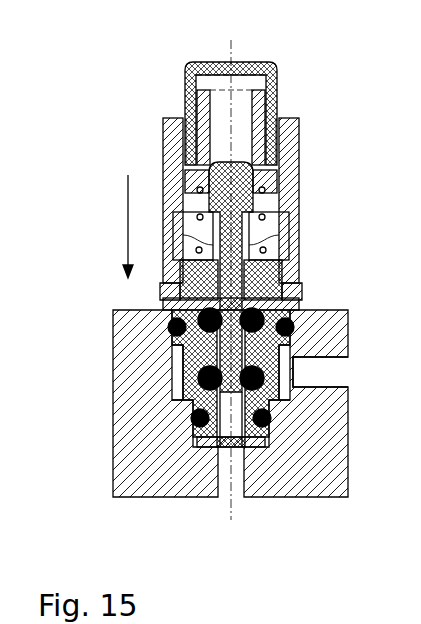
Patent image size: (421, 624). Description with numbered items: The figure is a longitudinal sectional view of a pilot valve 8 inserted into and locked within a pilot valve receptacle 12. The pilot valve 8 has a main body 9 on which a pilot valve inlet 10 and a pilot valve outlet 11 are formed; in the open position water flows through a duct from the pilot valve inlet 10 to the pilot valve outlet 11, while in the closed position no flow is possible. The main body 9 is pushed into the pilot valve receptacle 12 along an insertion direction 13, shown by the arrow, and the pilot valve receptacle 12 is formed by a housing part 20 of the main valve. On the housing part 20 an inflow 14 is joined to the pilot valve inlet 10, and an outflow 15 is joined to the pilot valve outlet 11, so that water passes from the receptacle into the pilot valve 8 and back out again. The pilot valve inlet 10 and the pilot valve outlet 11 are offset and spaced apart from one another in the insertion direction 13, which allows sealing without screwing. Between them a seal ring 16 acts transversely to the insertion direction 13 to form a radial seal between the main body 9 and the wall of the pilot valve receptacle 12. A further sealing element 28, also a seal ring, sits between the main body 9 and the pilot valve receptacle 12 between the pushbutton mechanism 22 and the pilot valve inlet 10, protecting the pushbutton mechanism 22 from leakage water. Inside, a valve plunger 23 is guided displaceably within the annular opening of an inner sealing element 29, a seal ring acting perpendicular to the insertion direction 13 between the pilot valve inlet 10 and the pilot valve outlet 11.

The pilot valve 8 is at (313, 138).
The main body 9 is at (298, 188).
The pilot valve inlet 10 is at (292, 346).
The pilot valve outlet 11 is at (233, 432).
The pilot valve receptacle 12 is at (133, 378).
The insertion direction 13 is at (117, 226).
The inflow 14 is at (327, 368).
The outflow 15 is at (218, 487).
The seal ring 16 is at (190, 418).
The housing part 20 is at (123, 335).
The pushbutton mechanism 22 is at (205, 68).
The valve plunger 23 is at (294, 299).
The sealing element 28 is at (172, 334).
The inner sealing element 29 is at (200, 312).